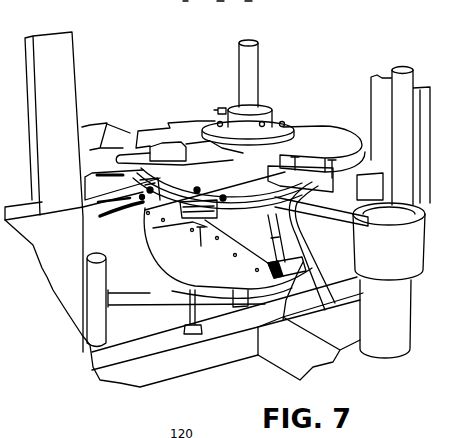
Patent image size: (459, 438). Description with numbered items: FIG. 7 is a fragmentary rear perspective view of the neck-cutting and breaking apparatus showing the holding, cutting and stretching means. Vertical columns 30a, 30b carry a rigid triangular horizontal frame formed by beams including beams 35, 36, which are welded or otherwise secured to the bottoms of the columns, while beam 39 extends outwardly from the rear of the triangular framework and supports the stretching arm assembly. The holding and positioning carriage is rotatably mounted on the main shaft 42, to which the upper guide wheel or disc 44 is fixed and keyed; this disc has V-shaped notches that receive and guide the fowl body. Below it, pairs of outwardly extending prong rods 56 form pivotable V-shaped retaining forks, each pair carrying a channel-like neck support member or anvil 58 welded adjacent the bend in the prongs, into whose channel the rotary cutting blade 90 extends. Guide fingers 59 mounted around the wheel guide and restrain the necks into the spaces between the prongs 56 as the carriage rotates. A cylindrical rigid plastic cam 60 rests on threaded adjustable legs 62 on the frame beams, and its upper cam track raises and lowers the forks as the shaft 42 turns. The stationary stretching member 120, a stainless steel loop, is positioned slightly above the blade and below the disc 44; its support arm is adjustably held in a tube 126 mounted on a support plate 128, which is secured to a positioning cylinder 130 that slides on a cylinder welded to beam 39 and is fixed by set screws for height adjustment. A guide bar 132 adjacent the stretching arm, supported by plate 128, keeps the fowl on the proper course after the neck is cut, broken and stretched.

The vertical column 30a is at (420, 92).
The vertical column 30b is at (62, 58).
The beam 35 is at (167, 368).
The beam 36 is at (125, 293).
The beam 39 is at (285, 359).
The main shaft 42 is at (253, 77).
The upper guide wheel or disc 44 is at (337, 138).
The prong rods 56 is at (198, 238).
The neck support member or anvil 58 is at (210, 240).
The guide fingers 59 is at (147, 213).
The cam 60 is at (241, 281).
The adjustable legs 62 is at (190, 296).
The cutting blade 90 is at (88, 133).
The stretching member 120 is at (127, 143).
The tube 126 is at (335, 178).
The support plate 128 is at (344, 210).
The positioning cylinder 130 is at (415, 232).
The guide bar 132 is at (306, 264).